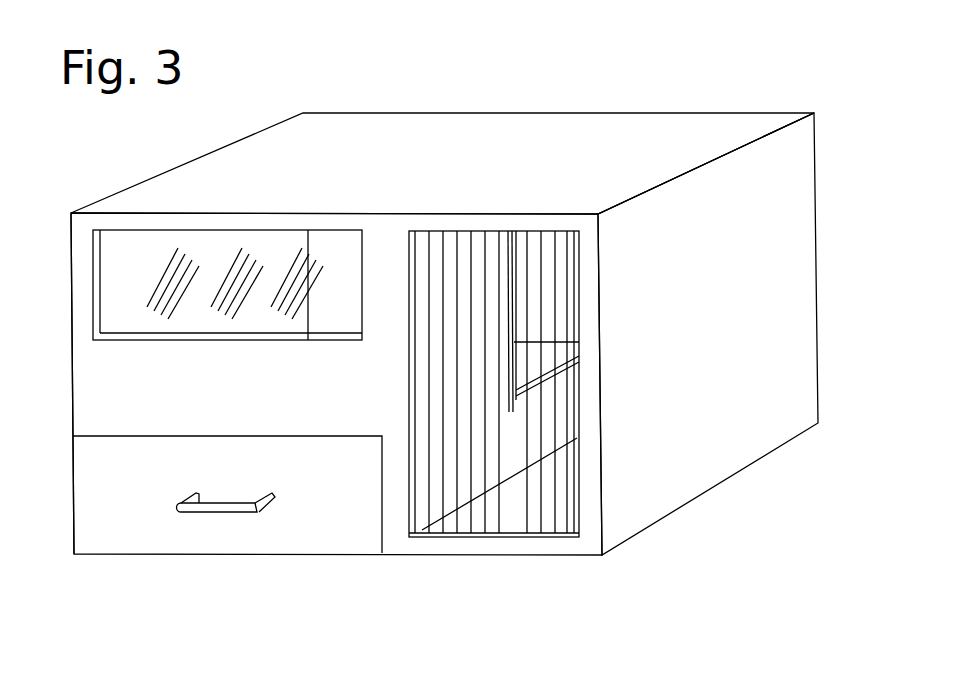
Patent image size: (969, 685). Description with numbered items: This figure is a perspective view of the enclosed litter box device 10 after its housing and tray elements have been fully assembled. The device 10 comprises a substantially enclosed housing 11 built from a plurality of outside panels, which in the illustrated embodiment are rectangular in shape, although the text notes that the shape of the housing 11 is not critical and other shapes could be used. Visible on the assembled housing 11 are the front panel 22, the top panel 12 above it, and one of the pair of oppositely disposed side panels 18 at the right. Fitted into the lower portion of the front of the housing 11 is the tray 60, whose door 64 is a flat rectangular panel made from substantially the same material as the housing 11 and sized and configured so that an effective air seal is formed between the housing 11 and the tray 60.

The enclosed litter box device 10 is at (512, 94).
The housing 11 is at (771, 101).
The top panel 12 is at (629, 150).
The side panel 18 is at (778, 294).
The front panel 22 is at (96, 394).
The tray 60 is at (328, 579).
The door 64 is at (115, 502).